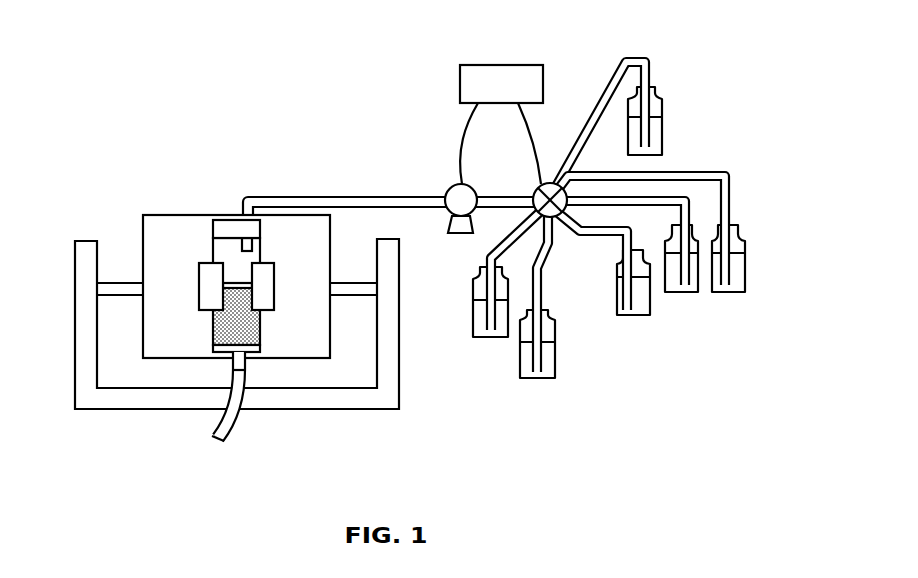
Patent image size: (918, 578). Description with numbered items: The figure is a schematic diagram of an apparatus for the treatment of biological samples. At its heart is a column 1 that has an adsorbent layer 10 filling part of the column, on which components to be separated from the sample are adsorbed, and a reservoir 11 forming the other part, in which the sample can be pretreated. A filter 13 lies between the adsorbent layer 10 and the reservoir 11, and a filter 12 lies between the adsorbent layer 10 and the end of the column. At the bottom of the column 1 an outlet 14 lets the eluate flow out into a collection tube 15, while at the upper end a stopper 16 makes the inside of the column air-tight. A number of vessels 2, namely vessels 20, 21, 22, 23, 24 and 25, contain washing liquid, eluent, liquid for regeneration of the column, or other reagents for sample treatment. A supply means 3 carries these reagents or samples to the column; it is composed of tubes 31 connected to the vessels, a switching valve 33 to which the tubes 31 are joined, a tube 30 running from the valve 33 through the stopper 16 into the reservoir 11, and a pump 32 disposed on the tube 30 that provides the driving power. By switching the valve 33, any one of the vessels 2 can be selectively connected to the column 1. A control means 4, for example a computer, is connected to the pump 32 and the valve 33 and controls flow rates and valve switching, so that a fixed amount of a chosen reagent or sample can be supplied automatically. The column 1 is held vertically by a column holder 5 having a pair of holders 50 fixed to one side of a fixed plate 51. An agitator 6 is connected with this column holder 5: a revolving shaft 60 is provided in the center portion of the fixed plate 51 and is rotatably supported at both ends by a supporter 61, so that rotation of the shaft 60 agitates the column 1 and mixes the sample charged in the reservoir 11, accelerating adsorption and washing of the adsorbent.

The column 1 is at (235, 305).
The vessels 2 is at (689, 275).
The supply means 3 is at (418, 203).
The control means 4 is at (423, 49).
The column holder 5 is at (274, 313).
The agitator 6 is at (237, 347).
The adsorbent layer 10 is at (270, 314).
The reservoir 11 is at (202, 285).
The filter 12 is at (270, 365).
The filter 13 is at (282, 254).
The outlet 14 is at (190, 406).
The collection tube 15 is at (257, 440).
The stopper 16 is at (209, 194).
The vessel 20 is at (606, 304).
The vessel 21 is at (673, 228).
The vessel 22 is at (763, 242).
The vessel 23 is at (679, 105).
The vessel 24 is at (460, 324).
The vessel 25 is at (505, 366).
The tube 30 is at (399, 189).
The tubes 31 is at (640, 199).
The pump 32 is at (445, 242).
The valve 33 is at (521, 185).
The holders 50 is at (235, 278).
The fixed plate 51 is at (287, 398).
The revolving shaft 60 is at (272, 307).
The supporter 61 is at (221, 432).